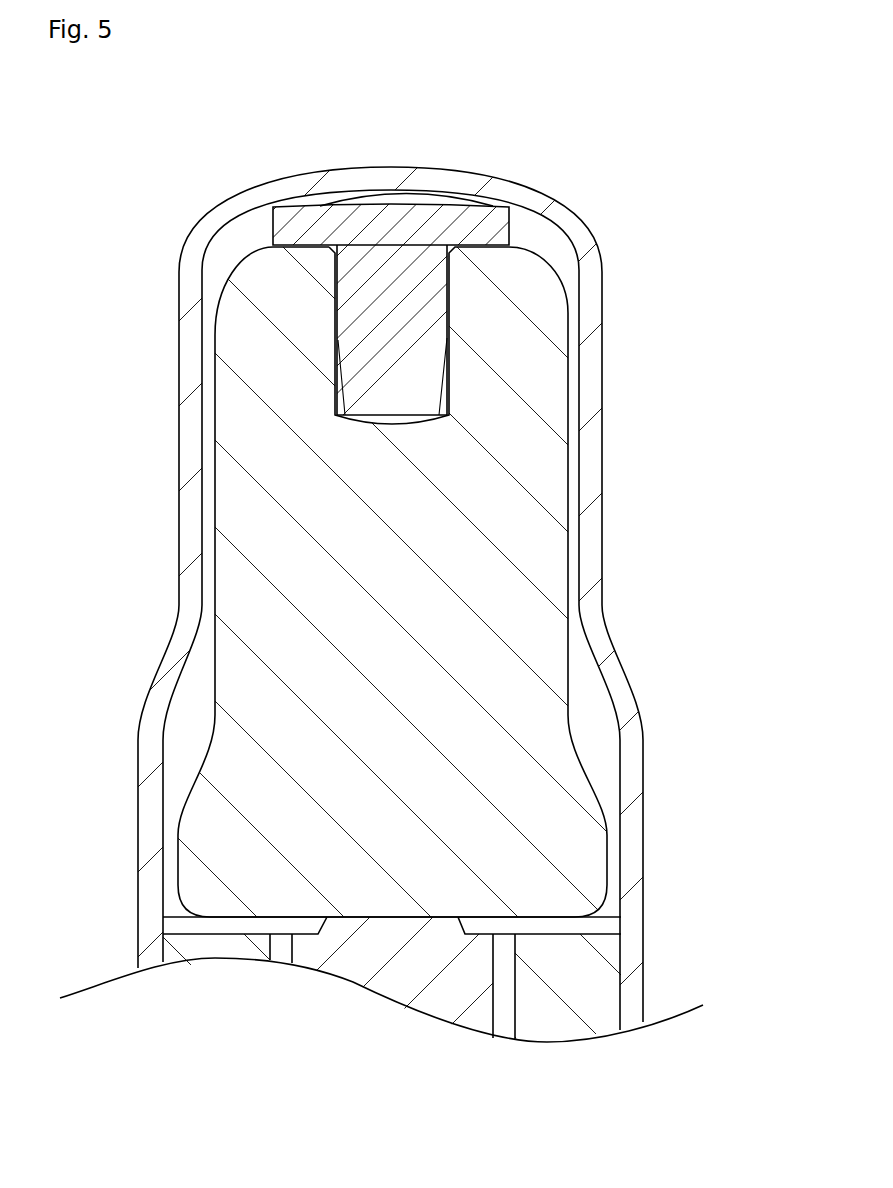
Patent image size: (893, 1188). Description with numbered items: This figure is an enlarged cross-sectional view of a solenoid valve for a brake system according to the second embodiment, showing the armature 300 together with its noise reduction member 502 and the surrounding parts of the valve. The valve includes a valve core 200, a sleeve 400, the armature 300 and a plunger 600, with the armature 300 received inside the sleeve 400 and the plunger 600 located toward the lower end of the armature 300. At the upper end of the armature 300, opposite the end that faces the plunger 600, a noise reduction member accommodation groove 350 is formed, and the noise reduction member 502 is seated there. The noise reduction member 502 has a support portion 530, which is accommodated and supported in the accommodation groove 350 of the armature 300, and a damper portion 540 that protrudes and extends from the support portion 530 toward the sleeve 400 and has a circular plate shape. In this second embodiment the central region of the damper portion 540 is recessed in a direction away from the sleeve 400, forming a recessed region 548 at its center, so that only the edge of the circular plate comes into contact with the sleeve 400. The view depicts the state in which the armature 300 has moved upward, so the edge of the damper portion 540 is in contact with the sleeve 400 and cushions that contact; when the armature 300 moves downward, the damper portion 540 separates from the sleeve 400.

The valve core 200 is at (222, 958).
The armature 300 is at (573, 483).
The noise reduction member accommodation groove 350 is at (448, 358).
The sleeve 400 is at (608, 413).
The noise reduction member 502 is at (498, 206).
The support portion 530 is at (380, 318).
The damper portion 540 is at (305, 227).
The recessed region 548 is at (392, 205).
The plunger 600 is at (400, 1003).